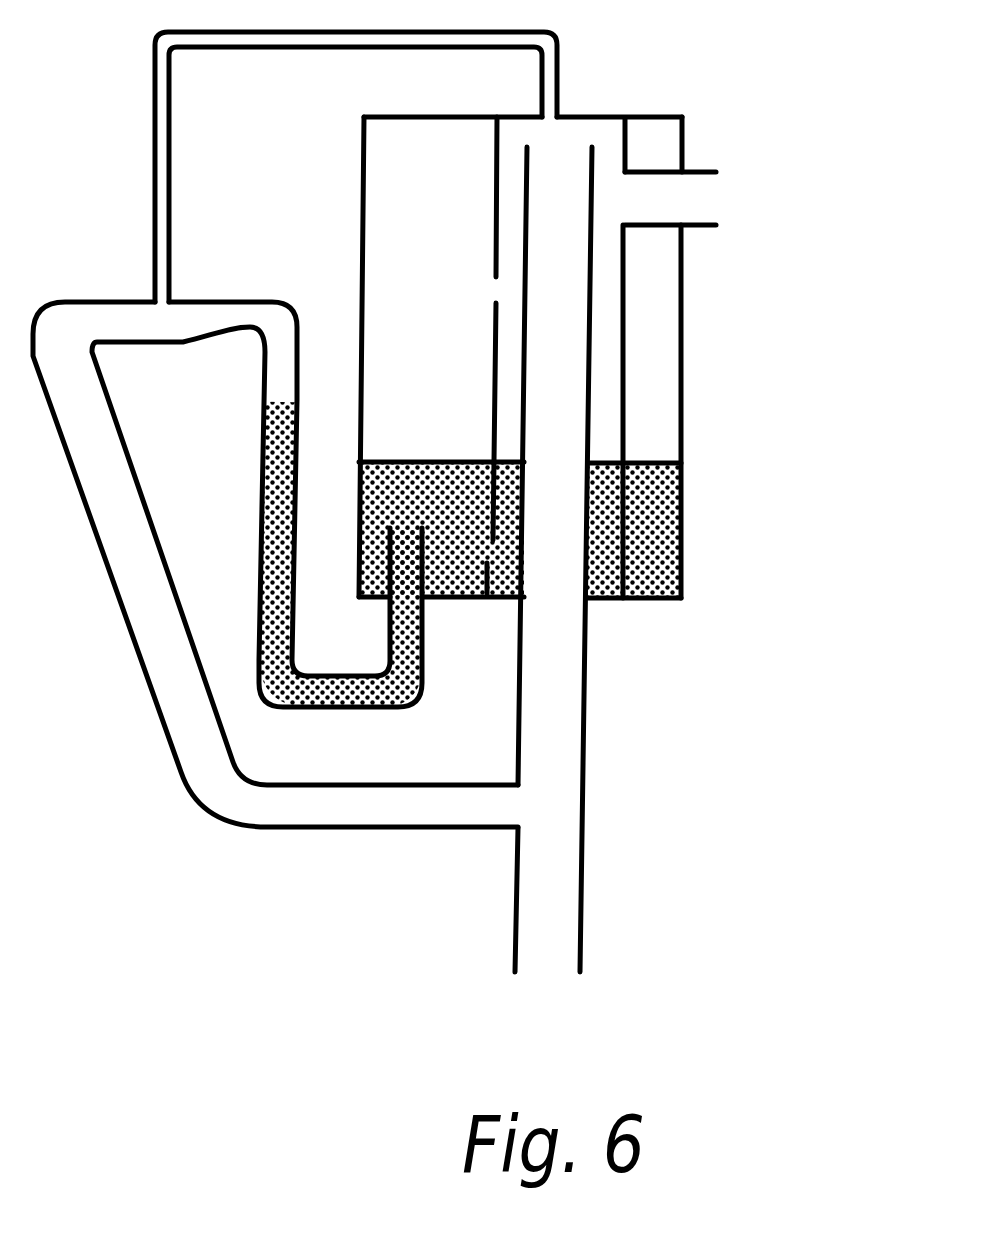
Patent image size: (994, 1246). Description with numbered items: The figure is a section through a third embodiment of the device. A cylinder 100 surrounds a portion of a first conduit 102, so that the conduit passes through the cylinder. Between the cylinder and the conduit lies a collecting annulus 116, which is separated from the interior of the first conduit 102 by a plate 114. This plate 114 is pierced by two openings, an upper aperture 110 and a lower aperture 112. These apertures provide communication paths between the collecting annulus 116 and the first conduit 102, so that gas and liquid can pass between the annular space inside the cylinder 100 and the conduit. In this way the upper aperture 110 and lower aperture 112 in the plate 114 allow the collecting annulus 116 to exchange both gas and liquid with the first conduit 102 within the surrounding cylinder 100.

The cylinder 100 is at (683, 143).
The first conduit 102 is at (623, 342).
The upper aperture 110 is at (493, 288).
The lower aperture 112 is at (490, 562).
The plate 114 is at (496, 227).
The collecting annulus 116 is at (508, 600).